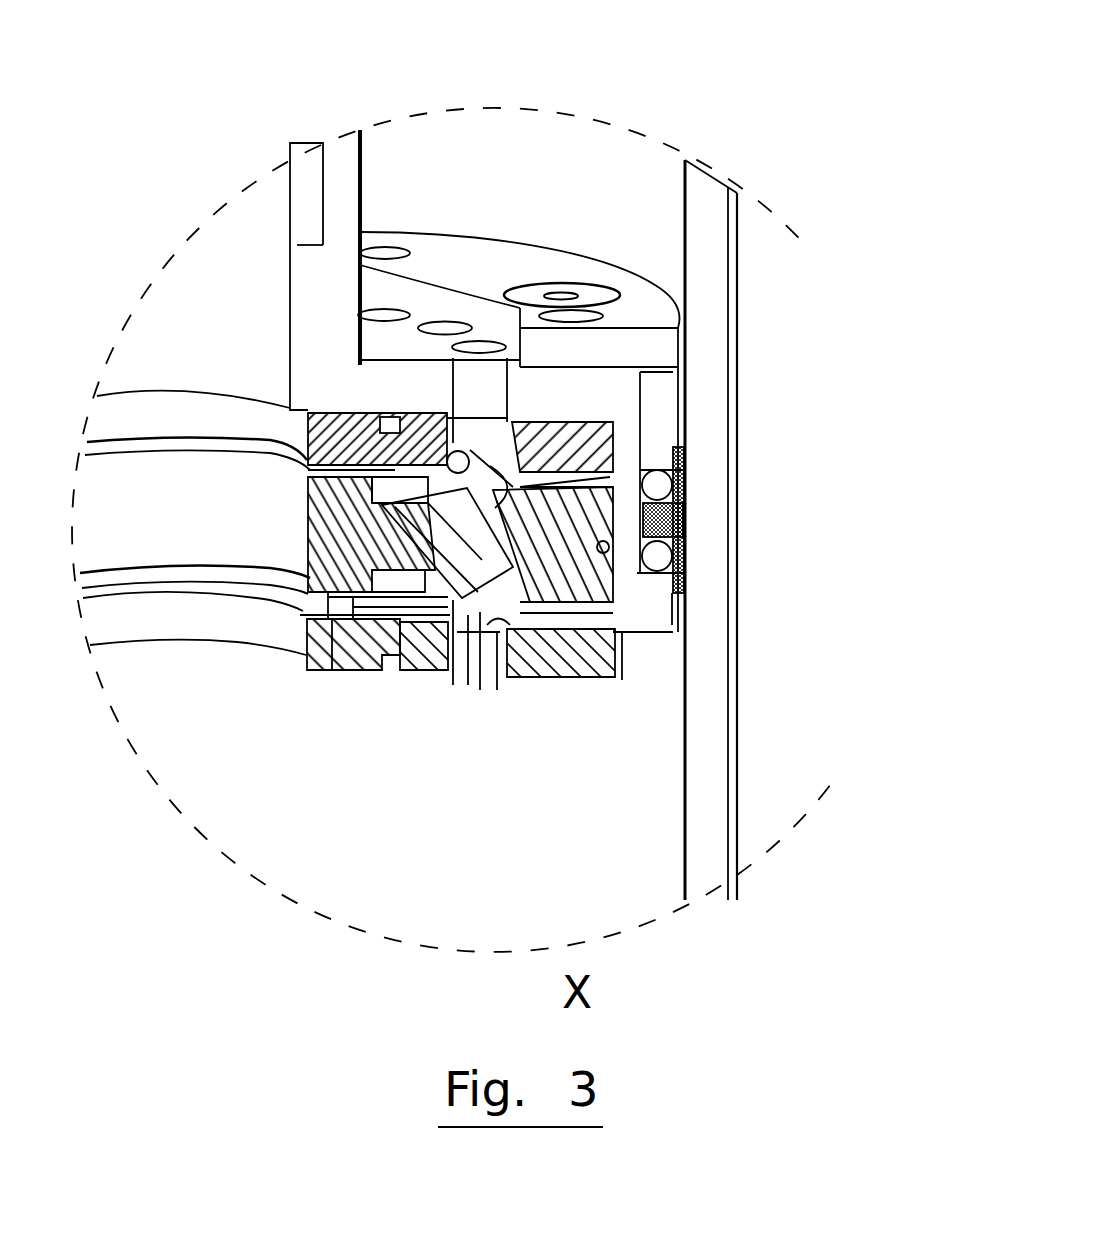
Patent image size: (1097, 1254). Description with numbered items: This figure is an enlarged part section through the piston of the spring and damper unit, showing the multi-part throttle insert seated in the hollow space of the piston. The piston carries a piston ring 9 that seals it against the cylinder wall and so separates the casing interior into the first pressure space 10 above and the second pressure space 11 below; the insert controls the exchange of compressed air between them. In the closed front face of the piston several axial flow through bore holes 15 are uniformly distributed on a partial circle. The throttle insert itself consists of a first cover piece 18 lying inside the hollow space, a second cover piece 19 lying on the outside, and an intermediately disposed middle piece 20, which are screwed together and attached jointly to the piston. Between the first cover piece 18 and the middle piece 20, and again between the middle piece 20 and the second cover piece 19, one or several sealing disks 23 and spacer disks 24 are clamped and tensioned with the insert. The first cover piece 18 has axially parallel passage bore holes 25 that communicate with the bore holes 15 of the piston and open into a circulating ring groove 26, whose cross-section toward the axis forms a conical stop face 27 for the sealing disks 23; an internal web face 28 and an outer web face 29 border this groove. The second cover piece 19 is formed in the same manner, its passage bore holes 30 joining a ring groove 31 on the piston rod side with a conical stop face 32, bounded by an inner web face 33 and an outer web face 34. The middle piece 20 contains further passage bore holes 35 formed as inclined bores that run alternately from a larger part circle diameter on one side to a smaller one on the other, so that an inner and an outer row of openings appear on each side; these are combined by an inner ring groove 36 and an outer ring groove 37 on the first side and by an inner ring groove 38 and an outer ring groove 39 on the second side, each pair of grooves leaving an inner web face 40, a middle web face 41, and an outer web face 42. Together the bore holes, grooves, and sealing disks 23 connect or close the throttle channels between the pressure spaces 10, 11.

The piston ring 9 is at (687, 525).
The first pressure space 10 is at (490, 196).
The second pressure space 11 is at (492, 938).
The axial flow through bore holes 15 is at (455, 322).
The first cover piece 18 is at (172, 427).
The second cover piece 19 is at (172, 636).
The middle piece 20 is at (152, 546).
The sealing disks 23 is at (308, 488).
The spacer disks 24 is at (612, 438).
The passage bore holes 25 is at (465, 422).
The circulating ring groove 26 is at (540, 429).
The conical stop face 27 is at (445, 460).
The internal web face 28 is at (325, 460).
The outer web face 29 is at (617, 462).
The passage bore holes 30 is at (490, 662).
The ring groove 31 is at (478, 690).
The conical stop face 32 is at (412, 627).
The inner web face 33 is at (310, 628).
The outer web face 34 is at (547, 678).
The passage bore holes 35 is at (477, 553).
The inner ring groove 36 is at (383, 458).
The outer ring groove 37 is at (640, 390).
The inner ring groove 38 is at (423, 587).
The outer ring groove 39 is at (495, 632).
The inner web face 40 is at (312, 472).
The middle web face 41 is at (450, 455).
The outer web face 42 is at (683, 450).